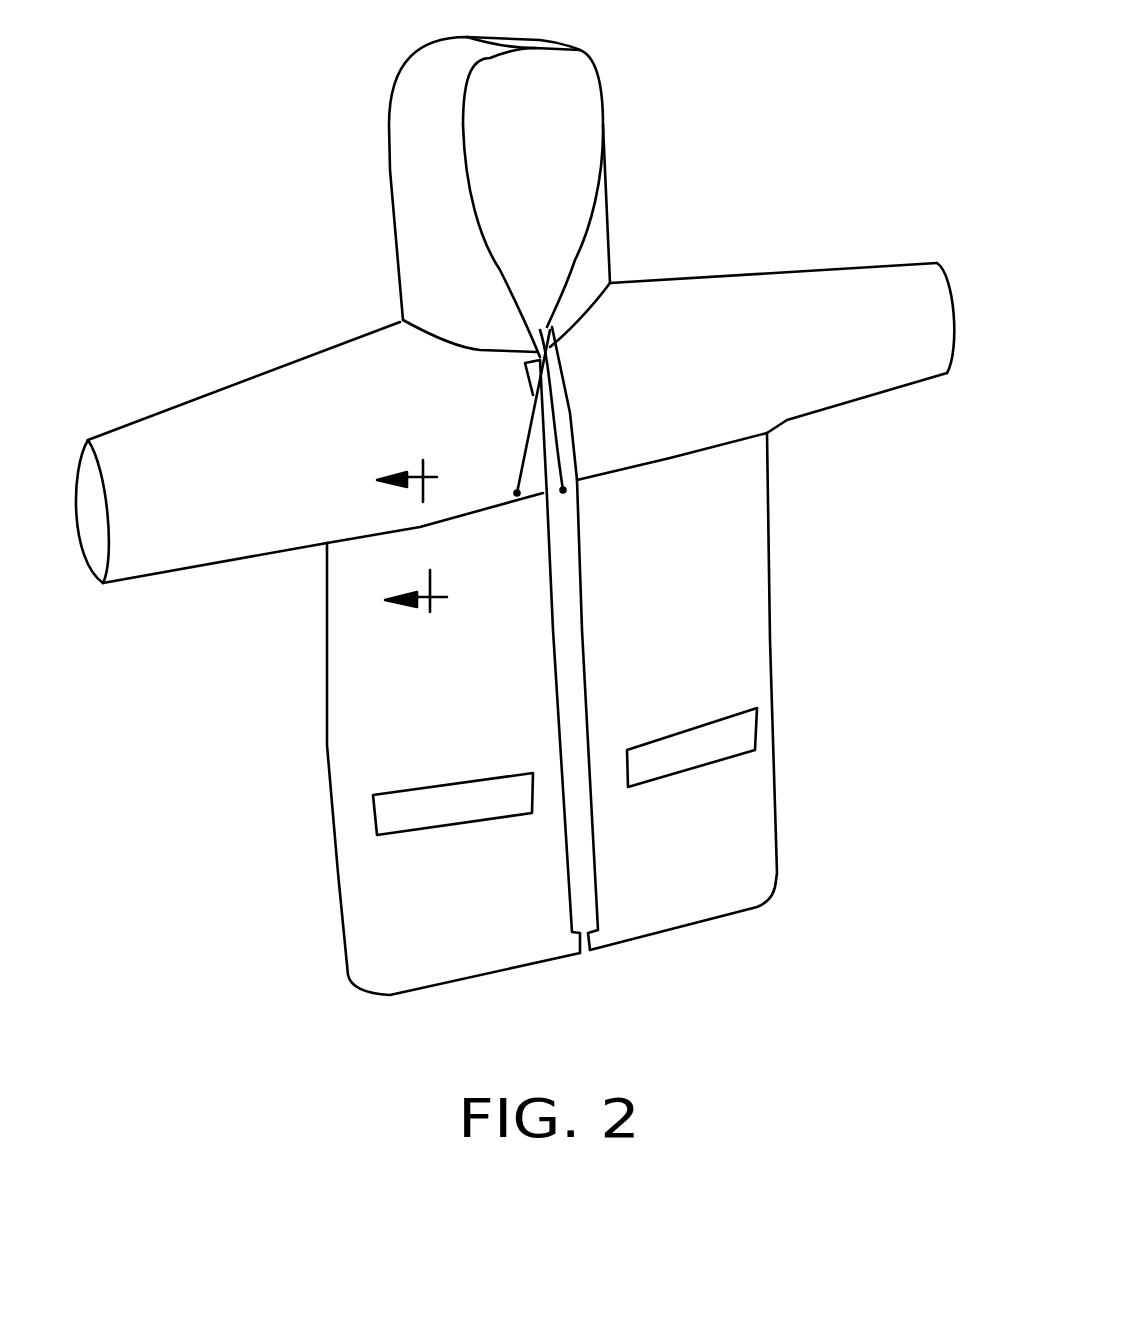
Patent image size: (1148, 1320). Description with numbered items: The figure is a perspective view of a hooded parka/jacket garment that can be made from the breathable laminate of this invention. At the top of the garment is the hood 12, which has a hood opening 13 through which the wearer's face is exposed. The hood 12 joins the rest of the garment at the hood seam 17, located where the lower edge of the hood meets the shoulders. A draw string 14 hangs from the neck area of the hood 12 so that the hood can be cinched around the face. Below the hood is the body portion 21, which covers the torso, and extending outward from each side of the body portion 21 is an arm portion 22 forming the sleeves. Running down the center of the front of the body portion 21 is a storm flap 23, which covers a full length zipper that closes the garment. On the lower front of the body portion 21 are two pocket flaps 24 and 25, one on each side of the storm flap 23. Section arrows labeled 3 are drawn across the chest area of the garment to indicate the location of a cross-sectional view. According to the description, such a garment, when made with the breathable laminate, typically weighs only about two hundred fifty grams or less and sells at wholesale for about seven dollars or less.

The section line of FIG. 3 is at (427, 531).
The hood 12 is at (415, 167).
The hood opening 13 is at (583, 153).
The draw string 14 is at (522, 452).
The hood seam 17 is at (448, 345).
The body portion 21 is at (737, 605).
The arm portion 22 is at (300, 377).
The storm flap 23 is at (572, 673).
The pocket flap 24 is at (458, 813).
The pocket flap 25 is at (697, 755).